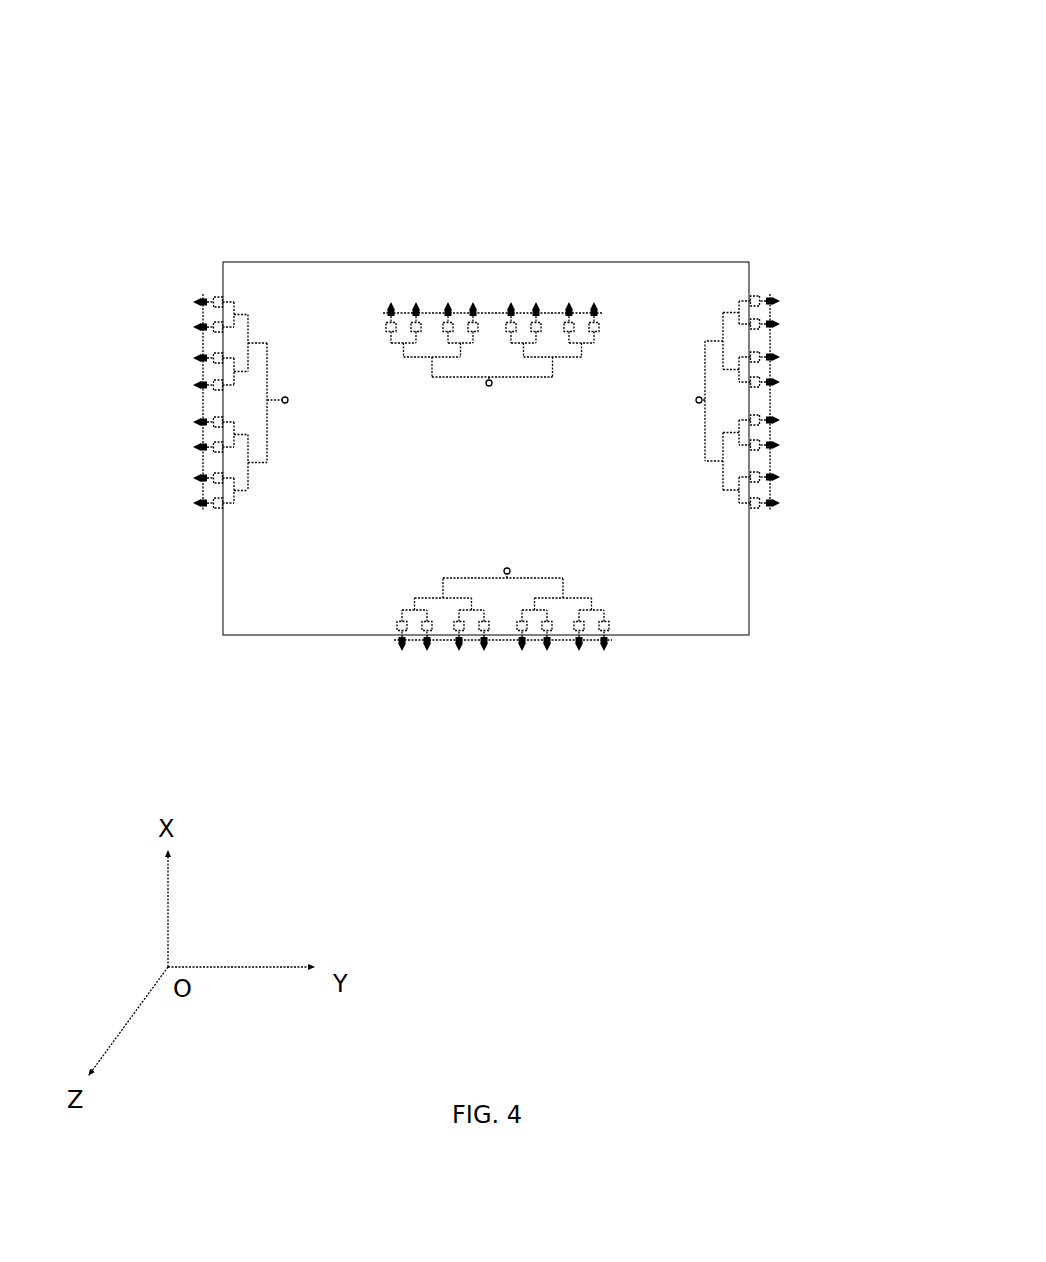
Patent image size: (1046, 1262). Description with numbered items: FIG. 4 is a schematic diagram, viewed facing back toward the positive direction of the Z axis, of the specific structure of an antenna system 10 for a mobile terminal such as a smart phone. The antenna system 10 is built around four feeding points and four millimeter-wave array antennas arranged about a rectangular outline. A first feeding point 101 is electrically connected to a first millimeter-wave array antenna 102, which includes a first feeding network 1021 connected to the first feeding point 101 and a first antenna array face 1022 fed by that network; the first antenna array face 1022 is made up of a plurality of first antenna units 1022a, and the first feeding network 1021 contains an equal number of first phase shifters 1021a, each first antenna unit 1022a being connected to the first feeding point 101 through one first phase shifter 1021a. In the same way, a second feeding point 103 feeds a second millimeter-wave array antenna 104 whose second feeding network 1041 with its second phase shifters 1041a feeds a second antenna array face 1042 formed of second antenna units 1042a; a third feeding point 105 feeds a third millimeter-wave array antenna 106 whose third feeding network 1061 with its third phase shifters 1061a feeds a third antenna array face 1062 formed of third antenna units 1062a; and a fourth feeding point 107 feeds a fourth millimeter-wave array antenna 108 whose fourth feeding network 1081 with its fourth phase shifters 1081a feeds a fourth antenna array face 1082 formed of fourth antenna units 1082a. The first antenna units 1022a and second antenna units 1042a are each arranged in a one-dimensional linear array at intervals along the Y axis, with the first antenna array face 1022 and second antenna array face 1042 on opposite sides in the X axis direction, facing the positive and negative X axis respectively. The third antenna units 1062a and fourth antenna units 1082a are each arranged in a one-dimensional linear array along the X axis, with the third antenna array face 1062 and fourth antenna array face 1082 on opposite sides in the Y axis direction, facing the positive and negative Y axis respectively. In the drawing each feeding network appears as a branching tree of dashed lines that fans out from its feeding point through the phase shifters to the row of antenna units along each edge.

The antenna system 10 is at (511, 27).
The first feeding point 101 is at (491, 385).
The first millimeter-wave array antenna 102 is at (697, 162).
The first feeding network 1021 is at (500, 259).
The first antenna array face 1022 is at (503, 244).
The first phase shifter 1021a is at (383, 329).
The first antenna unit 1022a is at (447, 310).
The second feeding point 103 is at (505, 569).
The second millimeter-wave array antenna 104 is at (420, 793).
The second feeding network 1041 is at (503, 691).
The second antenna array face 1042 is at (505, 708).
The second phase shifter 1041a is at (612, 628).
The second antenna unit 1042a is at (549, 648).
The third feeding point 105 is at (697, 402).
The third millimeter-wave array antenna 106 is at (865, 149).
The third feeding network 1061 is at (816, 375).
The third antenna array face 1062 is at (853, 336).
The third phase shifter 1061a is at (757, 510).
The third antenna unit 1062a is at (780, 384).
The fourth feeding point 107 is at (287, 402).
The fourth millimeter-wave array antenna 108 is at (243, 152).
The fourth feeding network 1081 is at (169, 367).
The fourth antenna array face 1082 is at (130, 338).
The fourth phase shifter 1081a is at (215, 508).
The fourth antenna unit 1082a is at (194, 422).